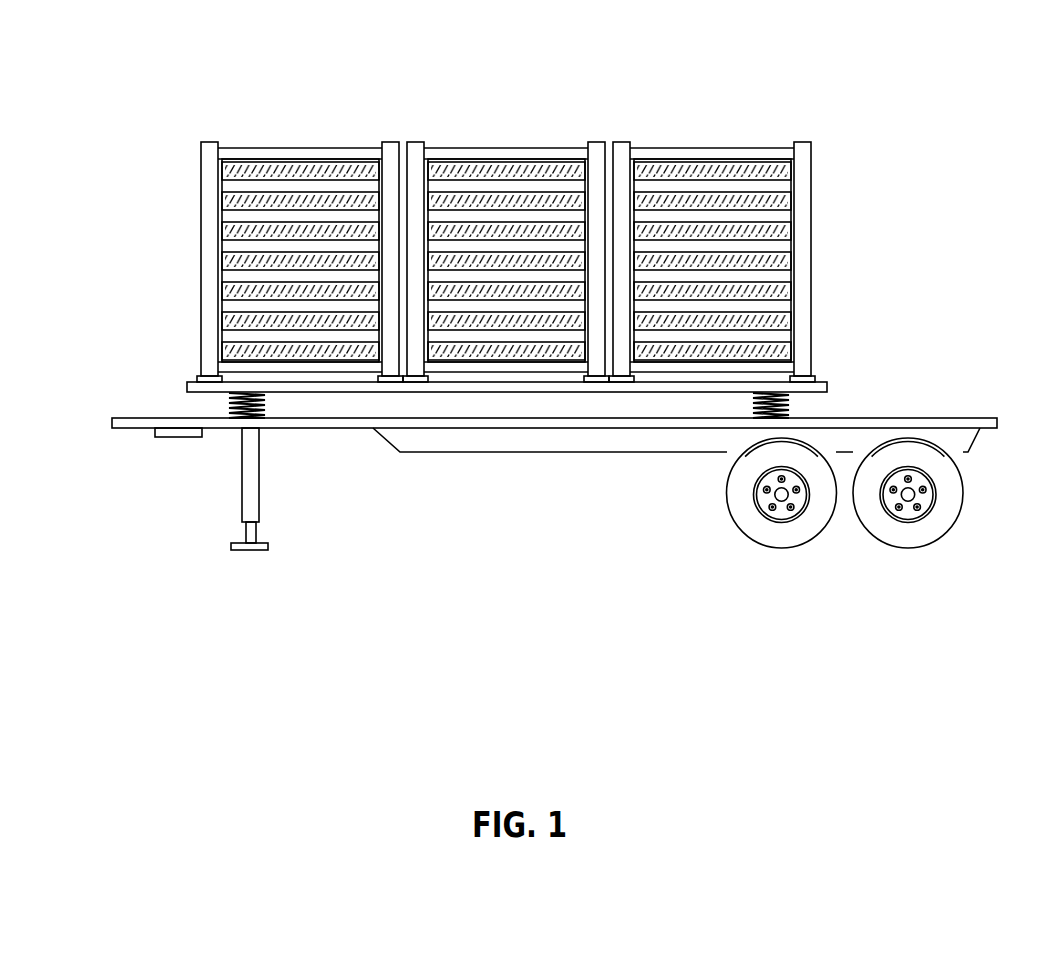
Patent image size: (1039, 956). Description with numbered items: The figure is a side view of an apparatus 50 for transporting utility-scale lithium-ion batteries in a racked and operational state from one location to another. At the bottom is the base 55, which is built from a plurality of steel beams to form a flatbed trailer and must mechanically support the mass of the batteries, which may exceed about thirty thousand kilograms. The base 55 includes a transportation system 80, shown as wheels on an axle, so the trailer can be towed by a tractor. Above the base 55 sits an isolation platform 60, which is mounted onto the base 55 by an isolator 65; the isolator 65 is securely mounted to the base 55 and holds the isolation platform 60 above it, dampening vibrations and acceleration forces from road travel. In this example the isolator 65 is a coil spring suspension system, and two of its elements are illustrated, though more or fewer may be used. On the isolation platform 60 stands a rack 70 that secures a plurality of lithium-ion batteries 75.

The apparatus 50 is at (252, 598).
The base 55 is at (477, 440).
The isolation platform 60 is at (828, 390).
The isolator 65 is at (227, 410).
The rack 70 is at (623, 167).
The lithium-ion batteries 75 is at (320, 172).
The transportation system 80 is at (754, 530).